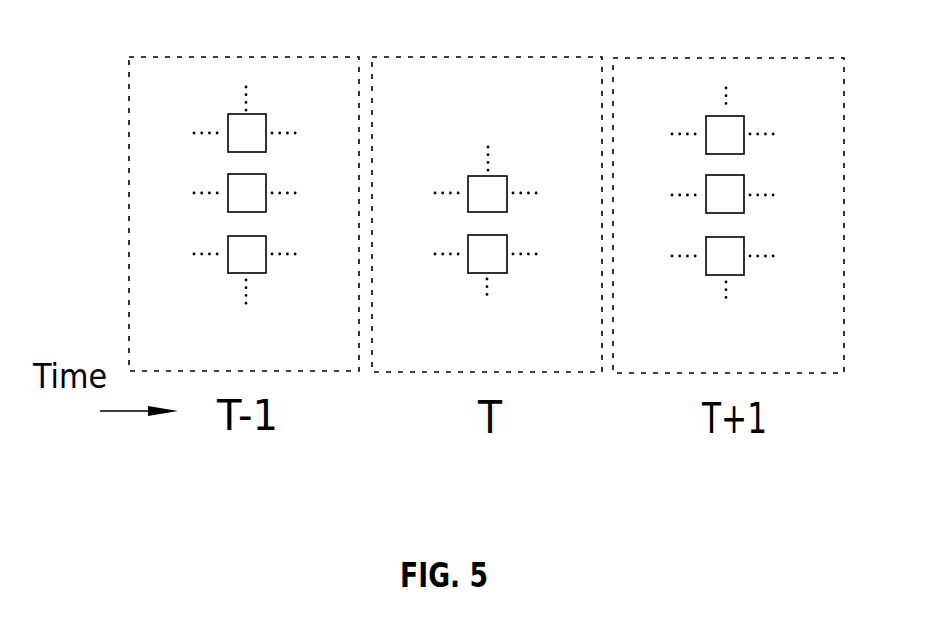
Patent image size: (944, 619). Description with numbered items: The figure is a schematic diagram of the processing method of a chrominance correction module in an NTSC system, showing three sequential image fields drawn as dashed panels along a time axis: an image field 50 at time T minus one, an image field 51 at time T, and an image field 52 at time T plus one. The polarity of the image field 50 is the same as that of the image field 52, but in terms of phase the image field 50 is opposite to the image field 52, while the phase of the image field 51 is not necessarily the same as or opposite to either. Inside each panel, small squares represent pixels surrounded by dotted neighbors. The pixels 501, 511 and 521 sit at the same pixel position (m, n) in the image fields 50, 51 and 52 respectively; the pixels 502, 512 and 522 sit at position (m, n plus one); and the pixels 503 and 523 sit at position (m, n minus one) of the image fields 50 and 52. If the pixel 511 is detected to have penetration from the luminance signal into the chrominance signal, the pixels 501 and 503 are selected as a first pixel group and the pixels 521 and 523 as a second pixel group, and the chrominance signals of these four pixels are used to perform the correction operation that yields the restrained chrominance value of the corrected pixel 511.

The image field 50 is at (218, 57).
The image field 51 is at (460, 57).
The image field 52 is at (678, 58).
The pixel 501 is at (266, 177).
The pixel 502 is at (266, 268).
The pixel 503 is at (266, 117).
The pixel 511 is at (504, 176).
The pixel 512 is at (504, 273).
The pixel 521 is at (744, 208).
The pixel 522 is at (744, 270).
The pixel 523 is at (744, 118).